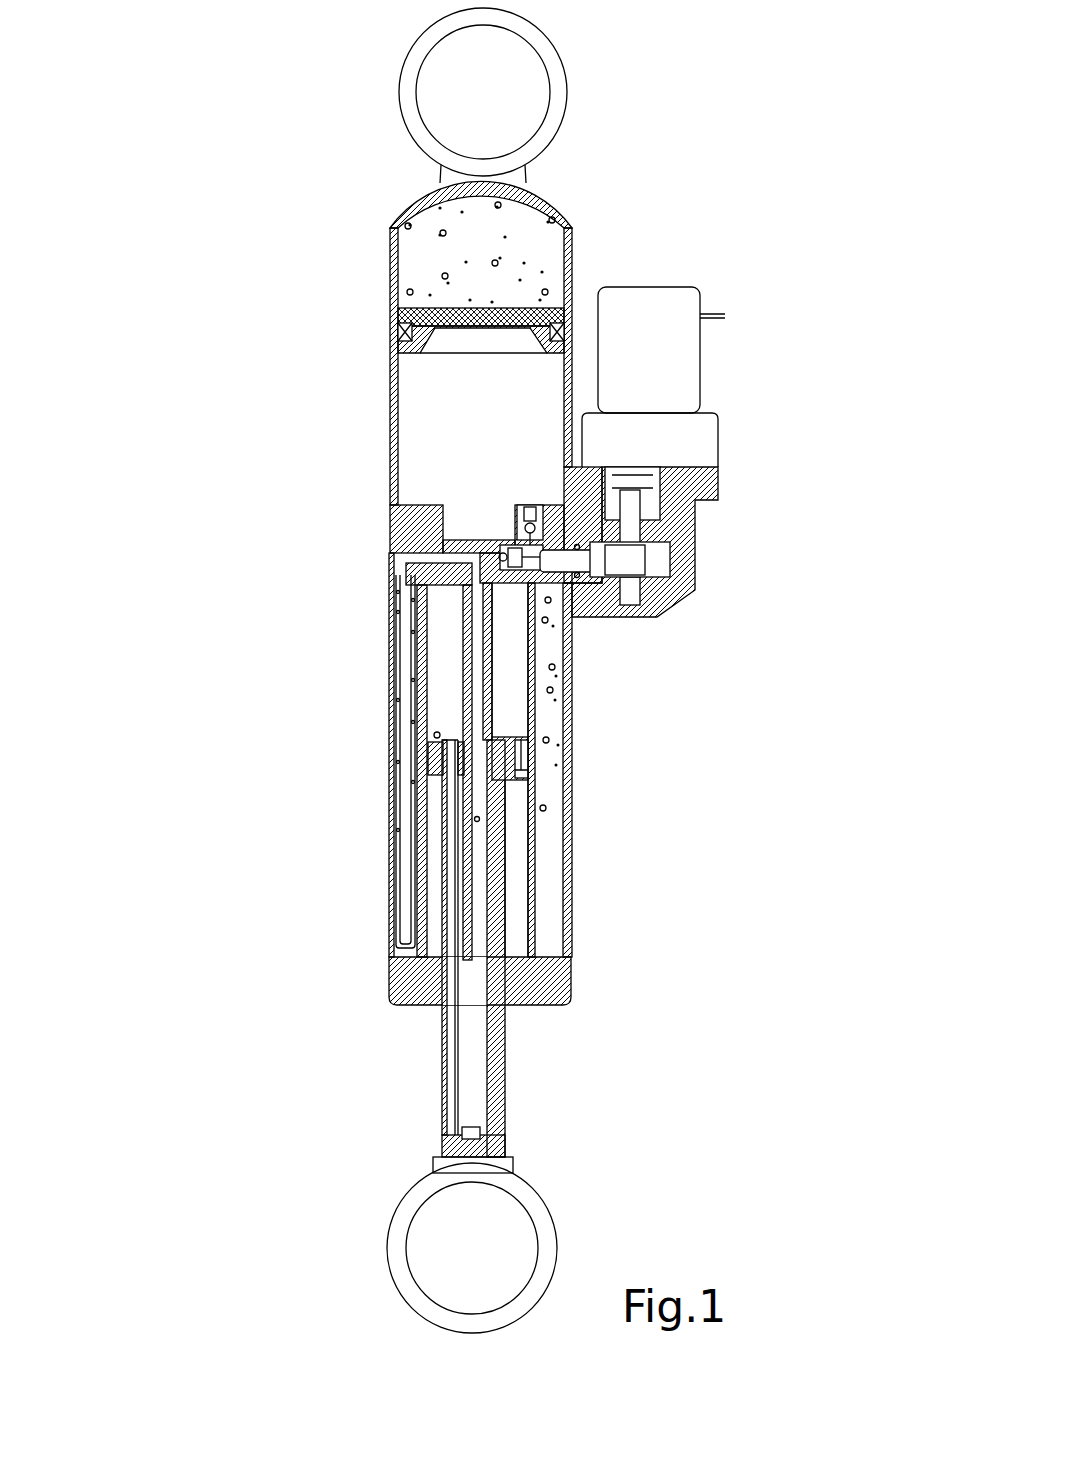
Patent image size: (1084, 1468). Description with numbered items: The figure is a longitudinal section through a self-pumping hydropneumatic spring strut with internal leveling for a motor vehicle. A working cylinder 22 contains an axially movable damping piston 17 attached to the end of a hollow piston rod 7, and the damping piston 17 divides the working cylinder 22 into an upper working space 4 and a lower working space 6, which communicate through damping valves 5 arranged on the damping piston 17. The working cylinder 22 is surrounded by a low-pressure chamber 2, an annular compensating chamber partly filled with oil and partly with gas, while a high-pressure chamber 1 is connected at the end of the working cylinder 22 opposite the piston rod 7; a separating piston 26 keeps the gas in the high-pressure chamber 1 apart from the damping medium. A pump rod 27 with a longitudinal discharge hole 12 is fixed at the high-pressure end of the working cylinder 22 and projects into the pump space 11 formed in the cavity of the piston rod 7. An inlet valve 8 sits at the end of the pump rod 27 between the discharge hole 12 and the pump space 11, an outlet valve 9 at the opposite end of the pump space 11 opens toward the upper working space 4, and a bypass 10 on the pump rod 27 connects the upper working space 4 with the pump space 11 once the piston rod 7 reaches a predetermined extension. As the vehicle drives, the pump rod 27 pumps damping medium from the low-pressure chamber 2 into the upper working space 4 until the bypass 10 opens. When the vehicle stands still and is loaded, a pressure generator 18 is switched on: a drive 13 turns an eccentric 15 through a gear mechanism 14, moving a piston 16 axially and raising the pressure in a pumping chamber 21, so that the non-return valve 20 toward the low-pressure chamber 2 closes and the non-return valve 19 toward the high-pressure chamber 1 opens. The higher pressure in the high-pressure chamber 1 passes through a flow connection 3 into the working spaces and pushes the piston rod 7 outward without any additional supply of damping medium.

The high-pressure chamber 1 is at (436, 398).
The low-pressure chamber 2 is at (548, 808).
The flow connection 3 is at (390, 552).
The upper working space 4 is at (447, 650).
The damping valves 5 is at (513, 778).
The lower working space 6 is at (517, 865).
The piston rod 7 is at (505, 1046).
The inlet valve 8 is at (475, 967).
The outlet valve 9 is at (462, 1140).
The bypass 10 is at (508, 838).
The pump space 11 is at (472, 1082).
The discharge hole 12 is at (477, 819).
The drive 13 is at (683, 358).
The gear mechanism 14 is at (690, 440).
The eccentric 15 is at (633, 557).
The piston 16 is at (585, 562).
The damping piston 17 is at (508, 737).
The pressure generator 18 is at (745, 466).
The non-return valve 19 is at (522, 507).
The non-return valve 20 is at (493, 548).
The pumping chamber 21 is at (515, 543).
The working cylinder 22 is at (533, 903).
The separating piston 26 is at (547, 307).
The pump rod 27 is at (495, 622).